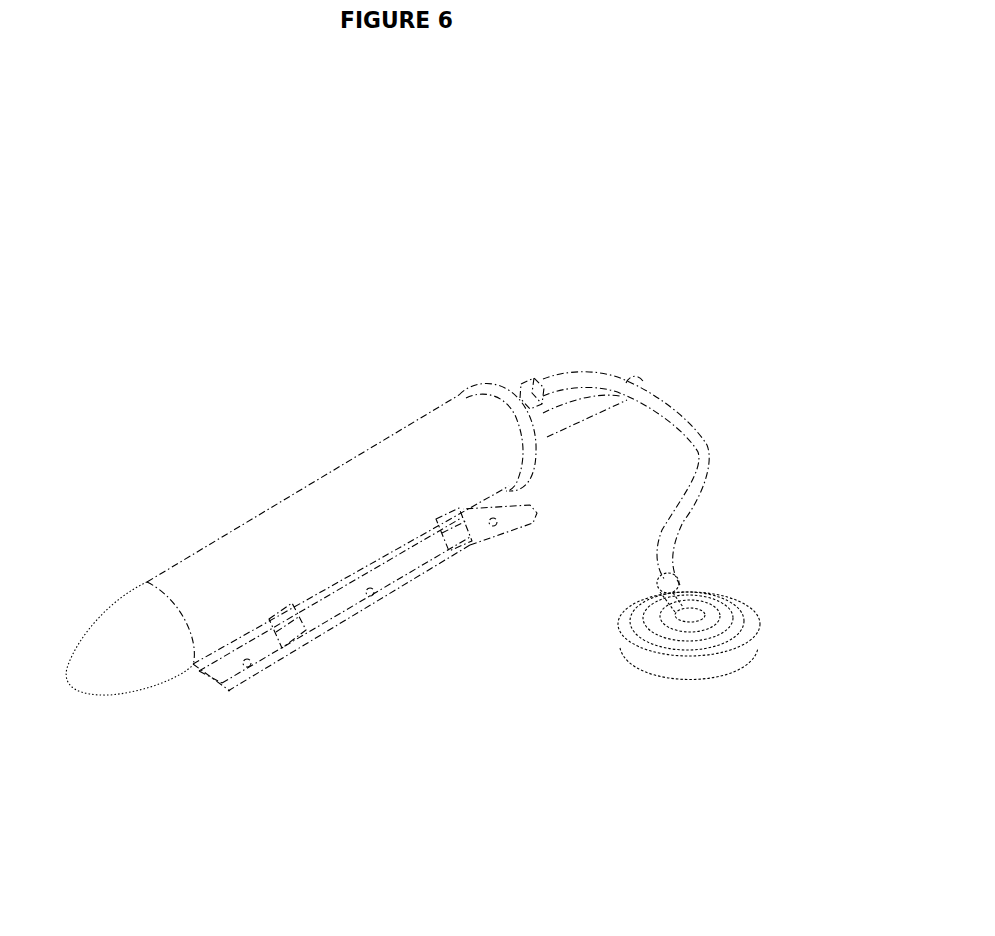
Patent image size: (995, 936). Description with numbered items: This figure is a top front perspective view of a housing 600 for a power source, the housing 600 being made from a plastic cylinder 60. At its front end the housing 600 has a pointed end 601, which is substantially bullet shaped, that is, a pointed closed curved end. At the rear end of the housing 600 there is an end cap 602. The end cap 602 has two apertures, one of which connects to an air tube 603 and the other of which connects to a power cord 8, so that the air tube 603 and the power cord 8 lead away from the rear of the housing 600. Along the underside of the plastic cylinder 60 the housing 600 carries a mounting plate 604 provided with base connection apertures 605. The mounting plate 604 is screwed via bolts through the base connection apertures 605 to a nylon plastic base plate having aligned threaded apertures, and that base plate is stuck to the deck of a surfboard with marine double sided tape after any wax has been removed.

The housing 600 is at (296, 458).
The plastic cylinder 60 is at (207, 592).
The pointed end 601 is at (132, 658).
The end cap 602 is at (489, 386).
The air tube 603 is at (706, 455).
The power cord 8 is at (572, 420).
The mounting plate 604 is at (397, 580).
The base connection apertures 605 is at (375, 592).